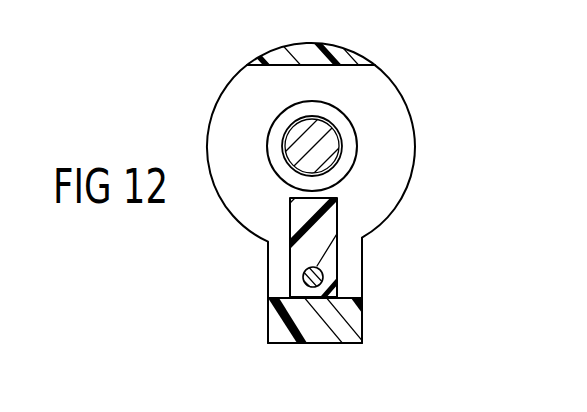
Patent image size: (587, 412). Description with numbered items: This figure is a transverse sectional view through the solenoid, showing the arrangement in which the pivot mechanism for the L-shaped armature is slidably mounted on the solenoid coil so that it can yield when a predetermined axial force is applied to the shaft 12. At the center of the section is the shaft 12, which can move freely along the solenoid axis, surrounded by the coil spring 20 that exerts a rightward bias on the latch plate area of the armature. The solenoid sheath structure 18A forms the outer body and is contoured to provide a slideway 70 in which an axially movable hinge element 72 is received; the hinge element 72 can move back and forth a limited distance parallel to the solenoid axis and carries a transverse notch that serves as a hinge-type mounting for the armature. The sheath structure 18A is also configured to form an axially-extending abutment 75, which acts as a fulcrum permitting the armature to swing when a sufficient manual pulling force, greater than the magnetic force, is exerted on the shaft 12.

The axially-extending abutment 75 is at (349, 52).
The coil spring 20 is at (358, 138).
The shaft 12 is at (338, 152).
The slideway 70 is at (290, 297).
The hinge element 72 is at (326, 271).
The solenoid sheath structure 18A is at (269, 323).